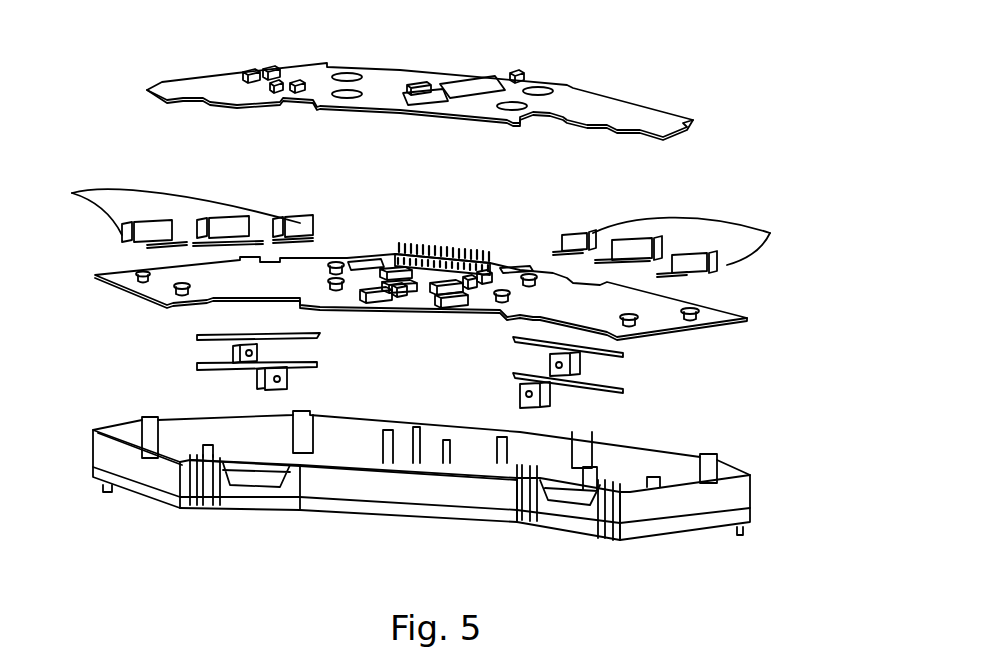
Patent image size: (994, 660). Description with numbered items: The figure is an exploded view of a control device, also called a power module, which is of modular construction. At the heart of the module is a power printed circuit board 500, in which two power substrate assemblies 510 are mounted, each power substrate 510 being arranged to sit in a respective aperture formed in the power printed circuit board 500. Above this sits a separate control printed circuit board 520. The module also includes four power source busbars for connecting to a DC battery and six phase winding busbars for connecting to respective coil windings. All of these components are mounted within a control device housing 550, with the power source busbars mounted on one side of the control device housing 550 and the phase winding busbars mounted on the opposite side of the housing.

The power printed circuit board 500 is at (737, 327).
The power substrate assembly 510 is at (167, 280).
The control printed circuit board 520 is at (567, 107).
The control device housing 550 is at (653, 528).